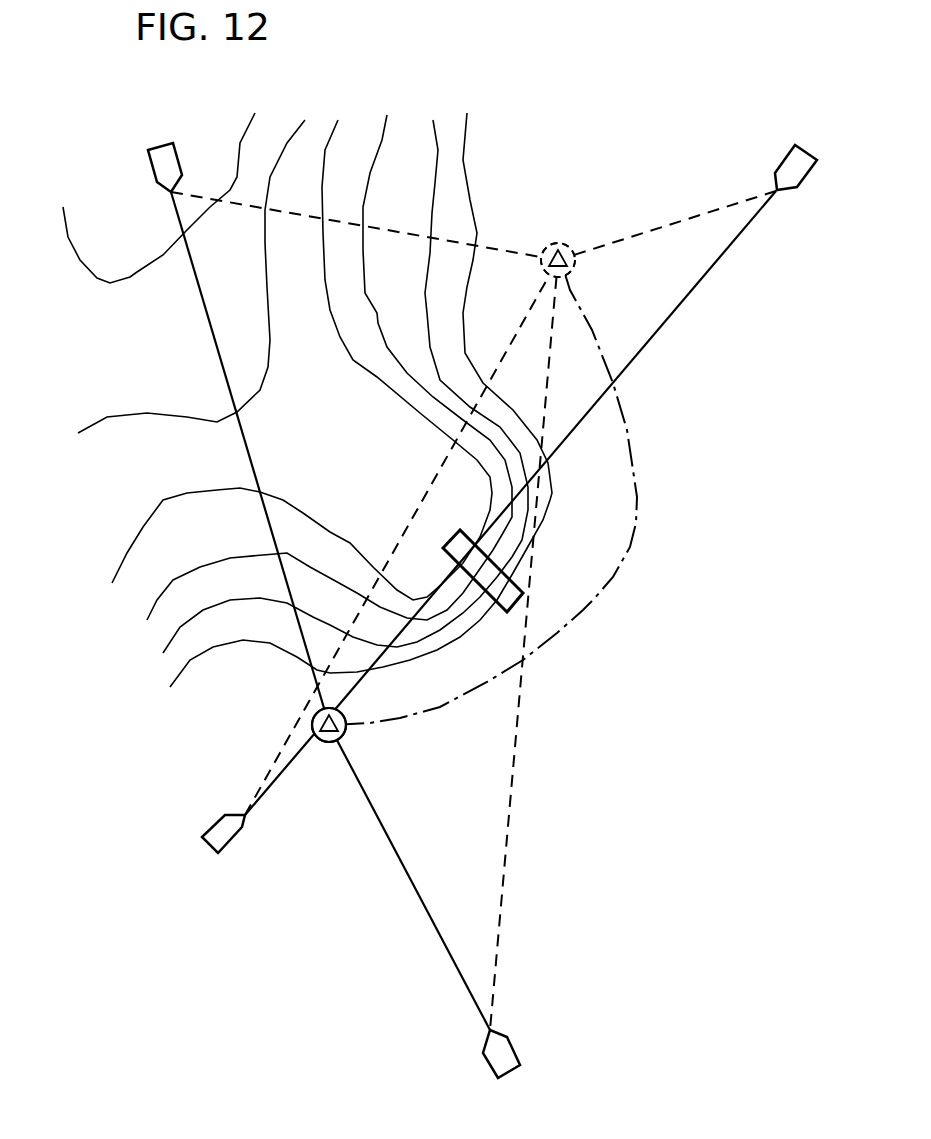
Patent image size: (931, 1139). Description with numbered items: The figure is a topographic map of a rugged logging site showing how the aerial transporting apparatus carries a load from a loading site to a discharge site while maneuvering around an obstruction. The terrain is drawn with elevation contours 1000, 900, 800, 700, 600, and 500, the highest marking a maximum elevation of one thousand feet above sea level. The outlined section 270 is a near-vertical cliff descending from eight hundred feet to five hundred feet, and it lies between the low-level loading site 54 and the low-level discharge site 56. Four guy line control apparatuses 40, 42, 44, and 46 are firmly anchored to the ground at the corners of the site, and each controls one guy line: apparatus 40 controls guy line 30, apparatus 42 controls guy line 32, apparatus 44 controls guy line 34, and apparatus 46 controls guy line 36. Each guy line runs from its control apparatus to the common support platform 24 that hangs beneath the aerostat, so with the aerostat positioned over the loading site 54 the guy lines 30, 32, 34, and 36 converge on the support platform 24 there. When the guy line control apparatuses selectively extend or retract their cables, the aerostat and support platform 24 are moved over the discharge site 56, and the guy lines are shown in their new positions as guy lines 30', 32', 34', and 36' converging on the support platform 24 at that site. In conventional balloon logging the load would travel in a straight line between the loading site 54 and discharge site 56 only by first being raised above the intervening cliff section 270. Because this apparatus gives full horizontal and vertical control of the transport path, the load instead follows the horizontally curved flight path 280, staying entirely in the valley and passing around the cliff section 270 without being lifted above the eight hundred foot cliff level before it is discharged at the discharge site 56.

The support platform 24 is at (547, 243).
The guy line 30 is at (555, 450).
The guy line 32 is at (212, 450).
The guy line 34 is at (413, 885).
The guy line 36 is at (279, 797).
The guy line 30' is at (675, 195).
The guy line 32' is at (356, 234).
The guy line 34' is at (535, 653).
The guy line 36' is at (365, 545).
The guy line control apparatus 40 is at (800, 145).
The guy line control apparatus 42 is at (151, 150).
The guy line control apparatus 44 is at (511, 1043).
The guy line control apparatus 46 is at (202, 838).
The loading site 54 is at (567, 244).
The discharge site 56 is at (327, 745).
The cliff section 270 is at (452, 540).
The flight path 280 is at (638, 497).
The elevation contour 1000 is at (147, 198).
The elevation contour 900 is at (174, 286).
The elevation contour 800 is at (283, 360).
The elevation contour 700 is at (310, 375).
The elevation contour 600 is at (327, 393).
The elevation contour 500 is at (343, 408).